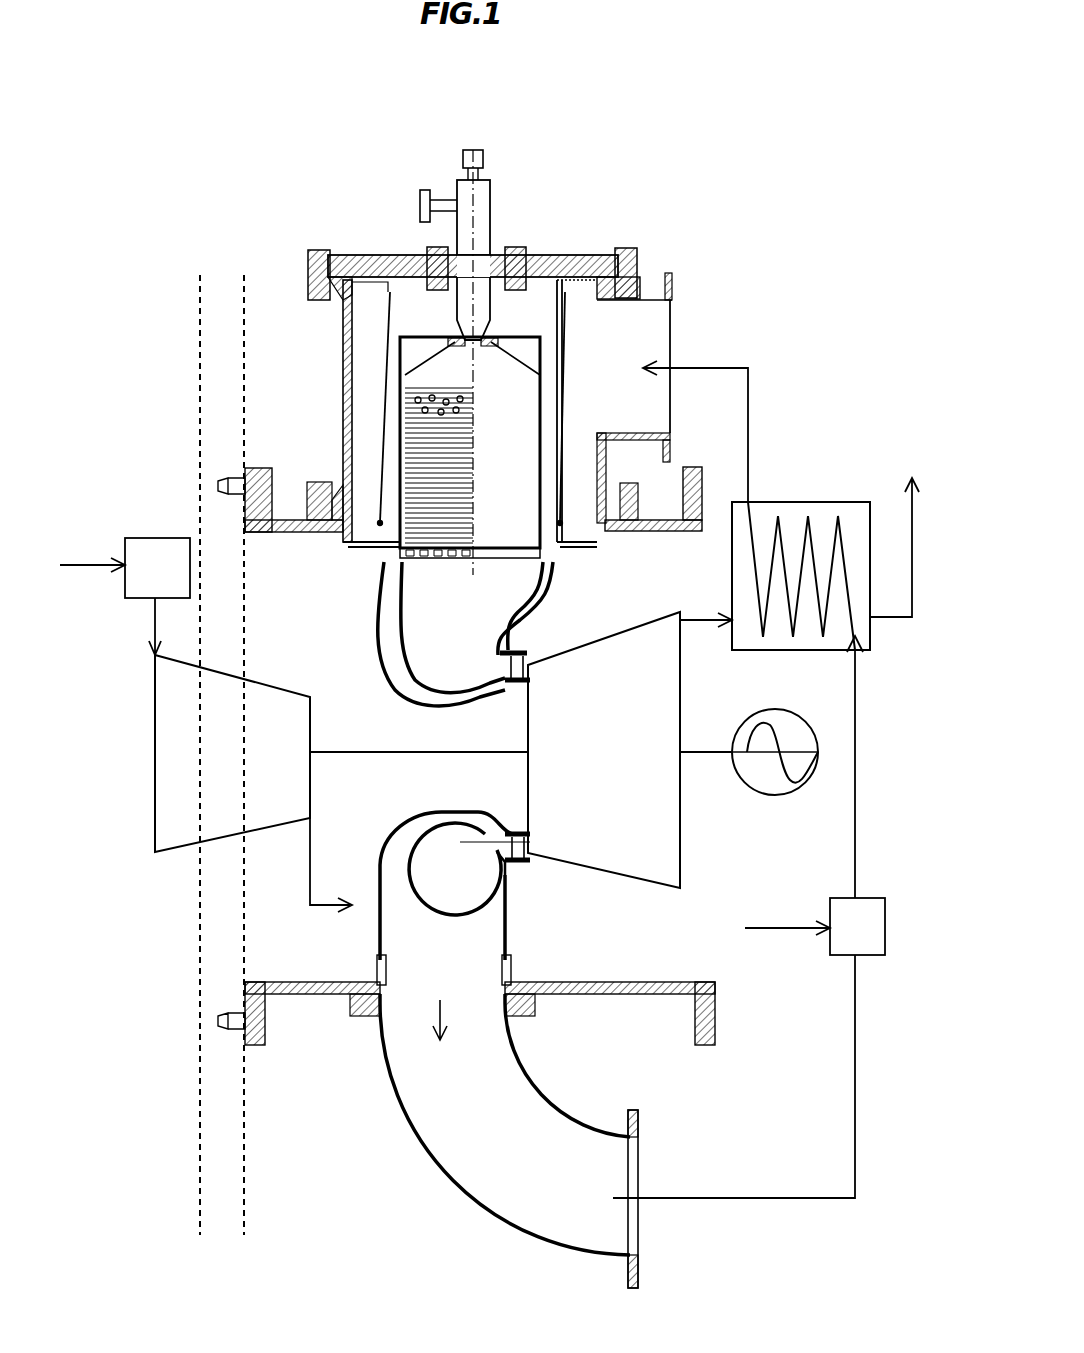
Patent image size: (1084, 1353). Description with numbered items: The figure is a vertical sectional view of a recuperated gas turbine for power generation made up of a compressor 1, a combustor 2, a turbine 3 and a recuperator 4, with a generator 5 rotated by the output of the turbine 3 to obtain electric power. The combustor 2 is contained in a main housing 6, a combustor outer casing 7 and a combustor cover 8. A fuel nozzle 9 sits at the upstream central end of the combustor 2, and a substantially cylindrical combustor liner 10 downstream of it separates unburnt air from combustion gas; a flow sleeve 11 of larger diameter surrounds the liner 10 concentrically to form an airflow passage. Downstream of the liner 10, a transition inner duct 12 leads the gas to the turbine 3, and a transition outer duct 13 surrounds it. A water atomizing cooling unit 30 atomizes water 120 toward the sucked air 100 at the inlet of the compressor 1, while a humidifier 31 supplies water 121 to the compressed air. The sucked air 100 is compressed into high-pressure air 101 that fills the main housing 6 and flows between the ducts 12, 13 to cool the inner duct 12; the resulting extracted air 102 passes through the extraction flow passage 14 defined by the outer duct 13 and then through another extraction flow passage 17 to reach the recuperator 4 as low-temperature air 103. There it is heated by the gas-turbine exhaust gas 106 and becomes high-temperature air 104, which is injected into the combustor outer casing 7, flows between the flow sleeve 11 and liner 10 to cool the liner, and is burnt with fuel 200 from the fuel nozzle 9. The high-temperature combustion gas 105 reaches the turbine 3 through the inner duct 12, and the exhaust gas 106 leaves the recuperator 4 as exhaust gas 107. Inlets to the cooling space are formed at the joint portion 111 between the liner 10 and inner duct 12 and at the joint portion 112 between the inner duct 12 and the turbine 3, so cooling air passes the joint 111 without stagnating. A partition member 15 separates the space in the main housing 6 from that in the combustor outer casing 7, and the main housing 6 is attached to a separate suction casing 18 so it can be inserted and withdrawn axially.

The compressor 1 is at (341, 753).
The combustor 2 is at (472, 259).
The turbine 3 is at (630, 750).
The recuperator 4 is at (801, 555).
The generator 5 is at (775, 775).
The main housing 6 is at (275, 532).
The combustor outer casing 7 is at (343, 380).
The combustor cover 8 is at (566, 255).
The fuel nozzle 9 is at (492, 302).
The combustor liner 10 is at (543, 493).
The flow sleeve 11 is at (388, 432).
The transition inner duct 12 is at (455, 826).
The transition outer duct 13 is at (380, 673).
The extraction flow passage 14 is at (510, 930).
The partition member 15 is at (597, 543).
The extraction flow passage 17 is at (400, 1123).
The suction casing 18 is at (232, 1192).
The water atomizing cooling unit 30 is at (135, 598).
The humidifier 31 is at (833, 958).
The sucked air 100 is at (158, 538).
The high-pressure air 101 is at (339, 865).
The extracted air 102 is at (443, 1036).
The low-temperature air 103 is at (768, 917).
The high-temperature air 104 is at (725, 431).
The high-temperature combustion gas 105 is at (469, 869).
The gas-turbine exhaust gas 106 is at (697, 604).
The exhaust gas 107 is at (906, 525).
The joint portion 111 is at (474, 642).
The joint portion 112 is at (520, 648).
The water 120 is at (83, 551).
The water 121 is at (785, 913).
The fuel 200 is at (448, 164).